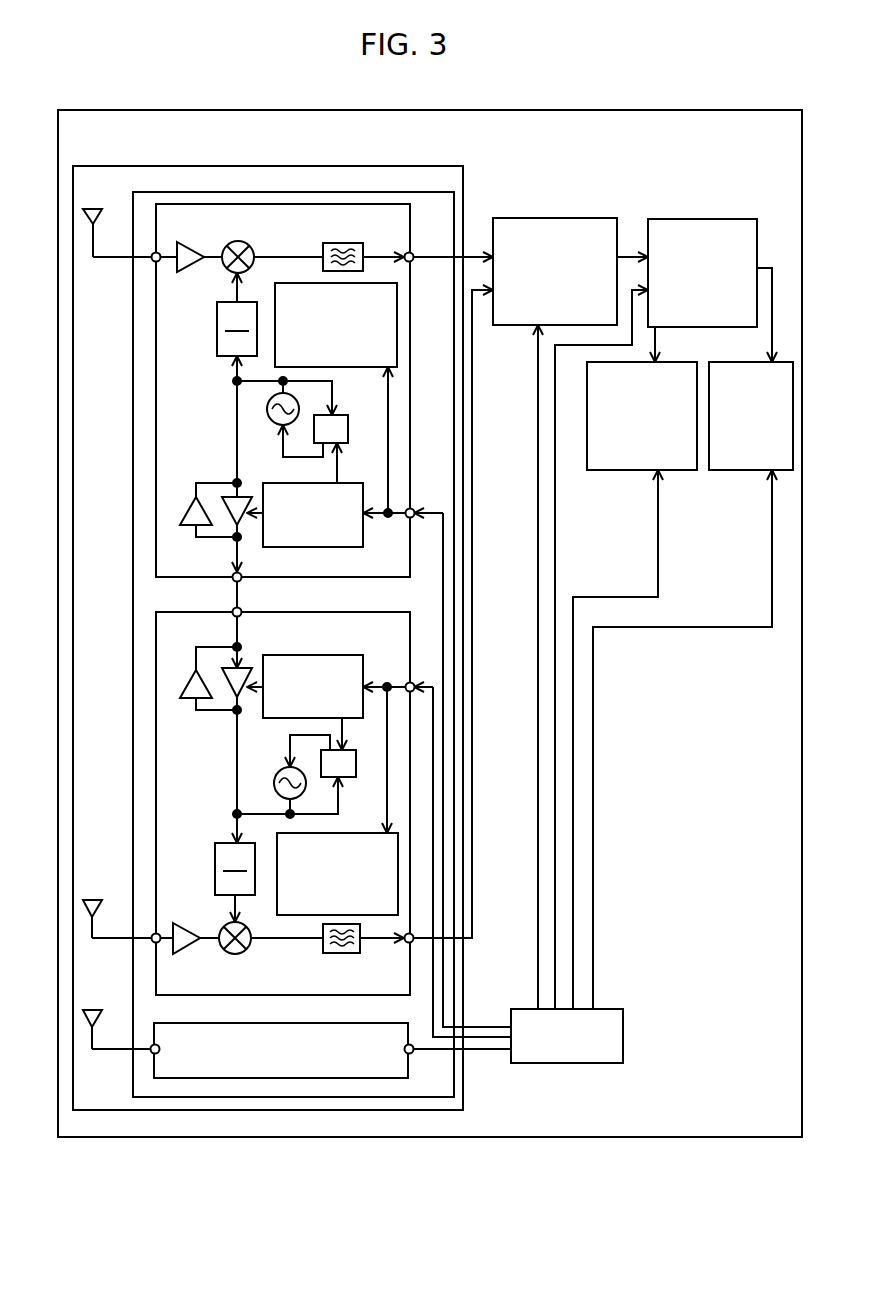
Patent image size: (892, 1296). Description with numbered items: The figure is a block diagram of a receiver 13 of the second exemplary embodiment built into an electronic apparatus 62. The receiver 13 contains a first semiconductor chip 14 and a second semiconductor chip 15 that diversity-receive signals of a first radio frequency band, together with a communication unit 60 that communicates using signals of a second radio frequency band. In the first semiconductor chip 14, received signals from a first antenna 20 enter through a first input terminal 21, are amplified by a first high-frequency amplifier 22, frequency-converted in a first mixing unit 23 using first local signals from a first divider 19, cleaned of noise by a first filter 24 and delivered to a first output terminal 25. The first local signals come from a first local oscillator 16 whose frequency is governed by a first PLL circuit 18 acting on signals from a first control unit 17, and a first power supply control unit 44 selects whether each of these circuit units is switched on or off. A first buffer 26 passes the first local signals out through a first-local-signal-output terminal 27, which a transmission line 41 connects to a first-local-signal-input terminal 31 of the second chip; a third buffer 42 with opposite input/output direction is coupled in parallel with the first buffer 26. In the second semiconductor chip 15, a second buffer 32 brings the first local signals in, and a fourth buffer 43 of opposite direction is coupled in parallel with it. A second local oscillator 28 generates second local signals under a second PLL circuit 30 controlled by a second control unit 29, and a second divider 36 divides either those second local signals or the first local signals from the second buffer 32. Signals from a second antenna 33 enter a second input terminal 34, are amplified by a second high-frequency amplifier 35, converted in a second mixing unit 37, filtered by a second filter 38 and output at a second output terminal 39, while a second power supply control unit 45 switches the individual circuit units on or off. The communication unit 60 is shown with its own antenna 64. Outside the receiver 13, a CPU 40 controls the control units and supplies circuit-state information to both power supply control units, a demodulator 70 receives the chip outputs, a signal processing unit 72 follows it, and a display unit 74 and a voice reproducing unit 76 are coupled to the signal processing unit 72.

The electronic apparatus 62 is at (732, 110).
The receiver 13 is at (141, 166).
The first semiconductor chip 14 is at (157, 423).
The second semiconductor chip 15 is at (157, 808).
The first antenna 20 is at (95, 207).
The first input terminal 21 is at (160, 262).
The first high-frequency amplifier 22 is at (196, 247).
The first mixing unit 23 is at (250, 245).
The first filter 24 is at (352, 242).
The first output terminal 25 is at (413, 252).
The first divider 19 is at (216, 341).
The first local oscillator 16 is at (273, 426).
The first phase-locked loop circuit 18 is at (348, 417).
The first control unit 17 is at (355, 548).
The first power supply control unit 44 is at (398, 327).
The third buffer 42 is at (219, 477).
The first buffer 26 is at (242, 520).
The first-local-signal-output terminal 27 is at (233, 575).
The transmission line 41 is at (233, 594).
The first-local-signal-input terminal 31 is at (241, 611).
The fourth buffer 43 is at (222, 681).
The second buffer 32 is at (247, 667).
The second control unit 29 is at (330, 655).
The second PLL circuit 30 is at (356, 778).
The second local oscillator 28 is at (277, 772).
The second divider 36 is at (212, 858).
The second power supply control unit 45 is at (302, 918).
The second antenna 33 is at (93, 897).
The second input terminal 34 is at (160, 931).
The second high-frequency amplifier 35 is at (183, 954).
The second mixing unit 37 is at (245, 951).
The second filter 38 is at (340, 954).
The second output terminal 39 is at (403, 945).
The communication antenna 64 is at (93, 1007).
The communication unit 60 is at (360, 1022).
The CPU 40 is at (568, 1064).
The demodulator 70 is at (557, 217).
The signal processing unit 72 is at (665, 219).
The display unit 74 is at (722, 471).
The voice reproducing unit 76 is at (632, 471).